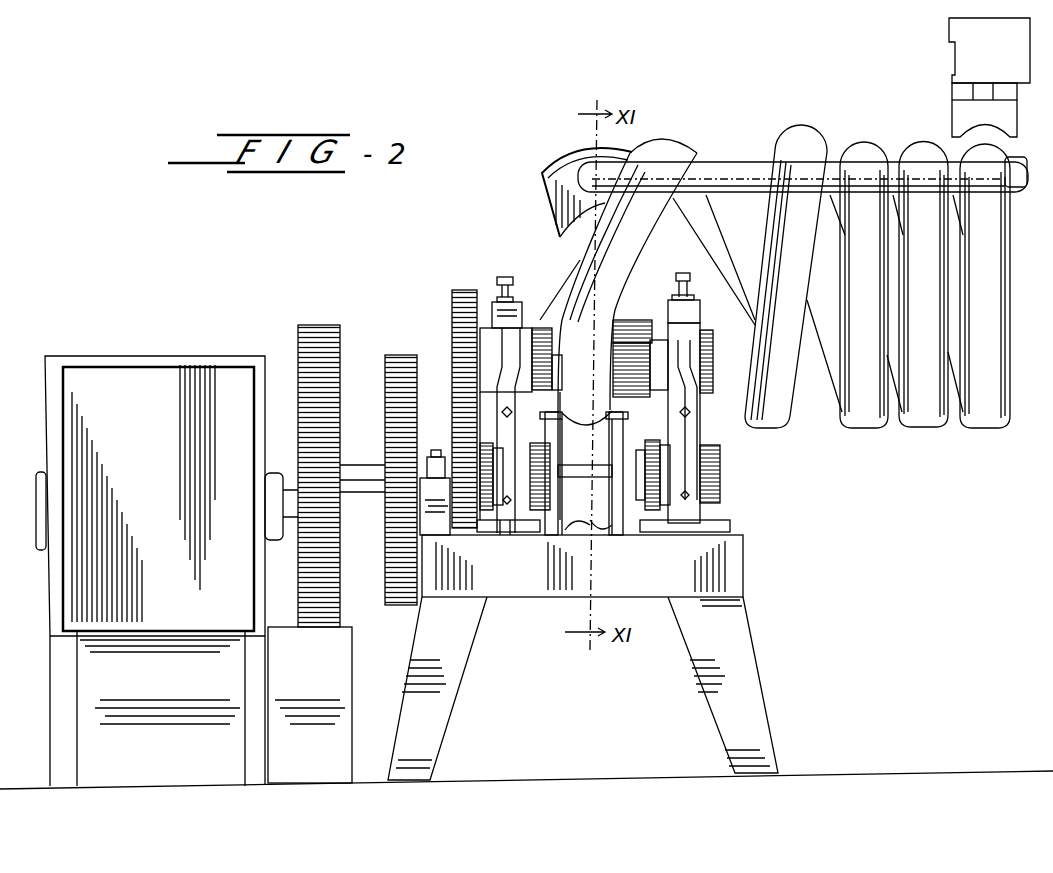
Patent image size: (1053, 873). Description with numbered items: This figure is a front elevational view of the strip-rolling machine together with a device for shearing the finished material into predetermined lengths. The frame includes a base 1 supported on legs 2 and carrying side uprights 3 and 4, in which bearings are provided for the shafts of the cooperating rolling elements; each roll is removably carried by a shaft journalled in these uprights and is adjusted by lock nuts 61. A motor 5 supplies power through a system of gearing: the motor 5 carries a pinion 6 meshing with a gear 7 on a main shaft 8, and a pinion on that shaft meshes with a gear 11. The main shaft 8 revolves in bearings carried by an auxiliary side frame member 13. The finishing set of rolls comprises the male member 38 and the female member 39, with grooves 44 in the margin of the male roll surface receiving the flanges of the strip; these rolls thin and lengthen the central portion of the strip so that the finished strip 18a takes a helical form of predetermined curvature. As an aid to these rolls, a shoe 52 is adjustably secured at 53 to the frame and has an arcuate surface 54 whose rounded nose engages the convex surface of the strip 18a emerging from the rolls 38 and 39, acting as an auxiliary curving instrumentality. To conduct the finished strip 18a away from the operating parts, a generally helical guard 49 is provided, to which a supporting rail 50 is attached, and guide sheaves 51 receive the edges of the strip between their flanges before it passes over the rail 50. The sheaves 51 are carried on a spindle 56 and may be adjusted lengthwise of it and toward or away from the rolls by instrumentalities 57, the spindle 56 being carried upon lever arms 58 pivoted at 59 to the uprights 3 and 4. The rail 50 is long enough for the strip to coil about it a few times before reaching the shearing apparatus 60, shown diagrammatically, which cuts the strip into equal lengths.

The base 1 is at (665, 600).
The legs 2 is at (455, 710).
The side upright 3 is at (515, 540).
The side upright 4 is at (722, 520).
The motor 5 is at (63, 418).
The pinion 6 is at (340, 520).
The gear 7 is at (340, 335).
The main shaft 8 is at (372, 466).
The gear 11 is at (415, 342).
The auxiliary side frame member 13 is at (440, 457).
The finished strip 18a is at (700, 122).
The male member 38 is at (575, 295).
The female member 39 is at (598, 540).
The grooves 44 is at (530, 285).
The guard 49 is at (543, 170).
The supporting rail 50 is at (750, 170).
The guide sheaves 51 is at (480, 360).
The shoe 52 is at (584, 473).
The adjusting means 53 is at (585, 540).
The arcuate surface 54 is at (590, 412).
The spindle 56 is at (640, 312).
The adjusting instrumentalities 57 is at (470, 393).
The lever arms 58 is at (490, 430).
The pivot 59 is at (493, 515).
The shearing apparatus 60 is at (950, 110).
The lock nuts 61 is at (650, 428).